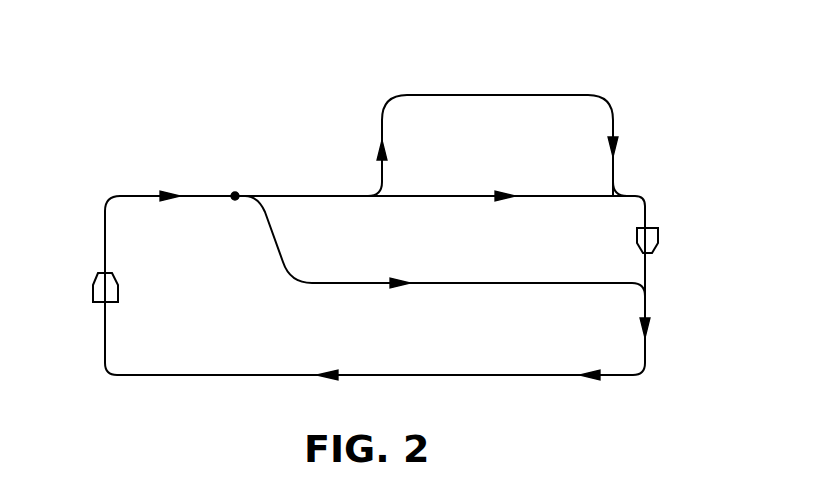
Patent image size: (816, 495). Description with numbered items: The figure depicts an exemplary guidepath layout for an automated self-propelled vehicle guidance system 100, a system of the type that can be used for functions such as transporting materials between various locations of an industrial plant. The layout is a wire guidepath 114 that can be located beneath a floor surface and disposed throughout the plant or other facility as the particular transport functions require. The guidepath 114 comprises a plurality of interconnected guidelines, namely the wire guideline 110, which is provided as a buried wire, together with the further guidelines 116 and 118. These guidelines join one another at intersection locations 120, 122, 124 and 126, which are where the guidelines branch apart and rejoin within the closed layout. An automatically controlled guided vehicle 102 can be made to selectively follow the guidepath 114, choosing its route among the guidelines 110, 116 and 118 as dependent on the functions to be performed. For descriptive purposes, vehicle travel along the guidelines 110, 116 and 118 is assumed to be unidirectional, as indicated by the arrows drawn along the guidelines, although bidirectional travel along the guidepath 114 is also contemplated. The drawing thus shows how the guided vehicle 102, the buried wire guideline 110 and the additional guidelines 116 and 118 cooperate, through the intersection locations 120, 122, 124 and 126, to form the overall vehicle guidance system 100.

The vehicle guidance system 100 is at (105, 402).
The guided vehicle 102 is at (653, 240).
The wire guideline 110 is at (107, 250).
The wire guidepath 114 is at (655, 145).
The guideline 116 is at (288, 272).
The guideline 118 is at (512, 92).
The intersection location 120 is at (237, 195).
The intersection location 122 is at (370, 198).
The intersection location 124 is at (633, 192).
The intersection location 126 is at (646, 300).